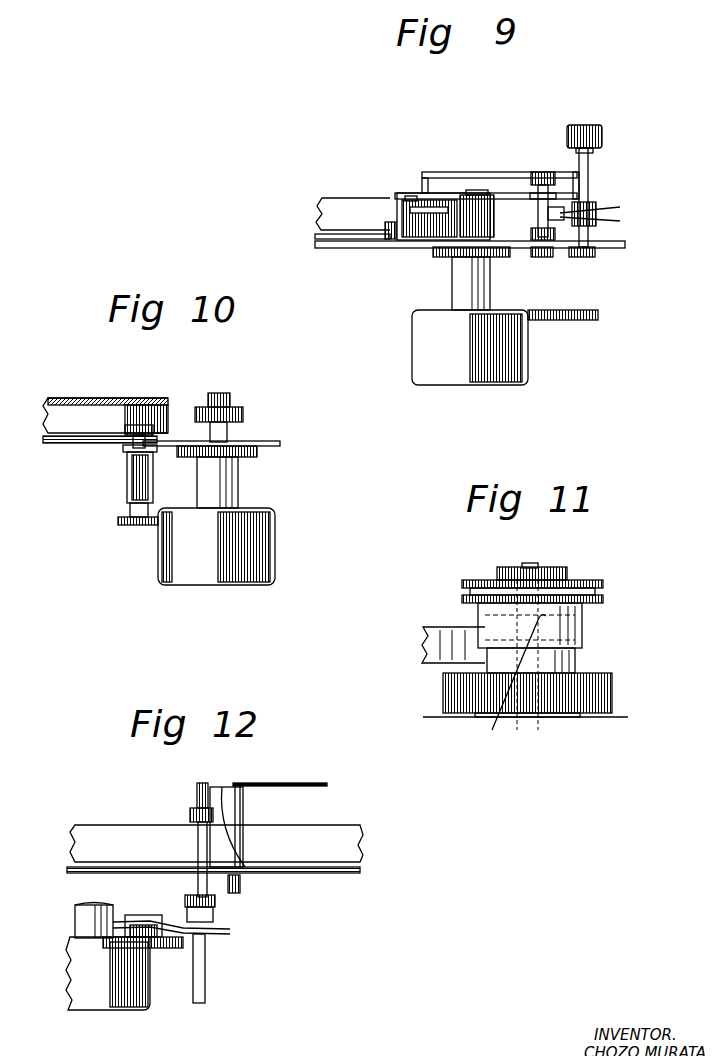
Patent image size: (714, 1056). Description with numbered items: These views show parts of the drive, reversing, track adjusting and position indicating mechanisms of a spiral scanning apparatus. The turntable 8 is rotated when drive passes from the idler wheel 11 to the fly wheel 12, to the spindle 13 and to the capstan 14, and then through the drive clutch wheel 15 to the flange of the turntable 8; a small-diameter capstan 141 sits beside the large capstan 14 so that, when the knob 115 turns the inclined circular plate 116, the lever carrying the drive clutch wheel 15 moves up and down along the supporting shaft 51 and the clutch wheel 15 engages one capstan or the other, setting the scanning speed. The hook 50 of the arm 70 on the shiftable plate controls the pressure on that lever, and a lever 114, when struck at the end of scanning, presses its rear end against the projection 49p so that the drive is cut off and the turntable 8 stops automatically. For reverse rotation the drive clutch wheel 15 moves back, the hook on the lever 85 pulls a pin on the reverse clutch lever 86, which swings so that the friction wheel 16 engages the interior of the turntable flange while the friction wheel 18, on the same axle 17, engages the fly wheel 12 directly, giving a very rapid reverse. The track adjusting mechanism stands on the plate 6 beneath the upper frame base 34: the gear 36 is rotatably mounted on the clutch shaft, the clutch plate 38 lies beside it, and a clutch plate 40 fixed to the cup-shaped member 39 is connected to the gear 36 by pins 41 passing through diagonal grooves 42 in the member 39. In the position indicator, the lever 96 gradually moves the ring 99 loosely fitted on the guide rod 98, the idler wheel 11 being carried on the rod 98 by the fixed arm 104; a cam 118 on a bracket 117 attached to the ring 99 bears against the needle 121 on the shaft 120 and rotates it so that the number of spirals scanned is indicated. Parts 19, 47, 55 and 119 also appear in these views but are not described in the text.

In FIG. 11, the plate 6 is at (433, 715).
In FIG. 9, the turntable 8 is at (358, 205).
In FIG. 10, the turntable 8 is at (87, 398).
In FIG. 12, the turntable 8 is at (118, 828).
In FIG. 9, the lever 85 is at (330, 215).
In FIG. 10, the lever 85 is at (170, 407).
In FIG. 9, the idler wheel 11 is at (577, 320).
In FIG. 12, the idler wheel 11 is at (158, 947).
In FIG. 9, the fly wheel 12 is at (533, 373).
In FIG. 10, the fly wheel 12 is at (275, 550).
In FIG. 12, the fly wheel 12 is at (150, 993).
In FIG. 9, the spindle 13 is at (490, 280).
In FIG. 10, the spindle 13 is at (238, 475).
In FIG. 12, the spindle 13 is at (73, 913).
In FIG. 9, the capstan 14 is at (490, 220).
In FIG. 10, the capstan 14 is at (243, 413).
In FIG. 9, the small-diameter capstan 141 is at (480, 198).
In FIG. 10, the small-diameter capstan 141 is at (230, 395).
In FIG. 9, the drive clutch wheel 15 is at (418, 236).
In FIG. 10, the friction wheel 16 is at (123, 403).
In FIG. 10, the axle 17 is at (130, 463).
In FIG. 10, the friction wheel 18 is at (127, 525).
In FIG. 9, the bar 19 is at (510, 193).
In FIG. 9, the upper frame base 34 is at (348, 243).
In FIG. 10, the upper frame base 34 is at (275, 442).
In FIG. 12, the upper frame base 34 is at (337, 875).
In FIG. 11, the gear 36 is at (610, 702).
In FIG. 11, the clutch plate 38 is at (607, 595).
In FIG. 11, the cup-shaped member 39 is at (583, 622).
In FIG. 11, the clutch plate 40 is at (633, 612).
In FIG. 11, the pins 41 is at (492, 730).
In FIG. 11, the diagonal grooves 42 is at (563, 640).
In FIG. 11, the arm 47 is at (440, 630).
In FIG. 9, the projection 49p is at (580, 173).
In FIG. 9, the hook 50 is at (388, 226).
In FIG. 9, the supporting shaft 51 is at (542, 172).
In FIG. 11, the cap 55 is at (540, 565).
In FIG. 9, the arm 70 is at (315, 238).
In FIG. 10, the reverse clutch lever 86 is at (58, 443).
In FIG. 12, the lever 96 is at (183, 903).
In FIG. 12, the guide rod 98 is at (207, 967).
In FIG. 12, the ring 99 is at (215, 912).
In FIG. 12, the fixed arm 104 is at (230, 930).
In FIG. 9, the lever 114 is at (470, 172).
In FIG. 9, the knob 115 is at (597, 125).
In FIG. 9, the inclined circular plate 116 is at (618, 205).
In FIG. 12, the bracket 117 is at (197, 840).
In FIG. 12, the cam 118 is at (243, 820).
In FIG. 12, the nut 119 is at (243, 860).
In FIG. 12, the shaft 120 is at (243, 795).
In FIG. 12, the needle 121 is at (300, 783).